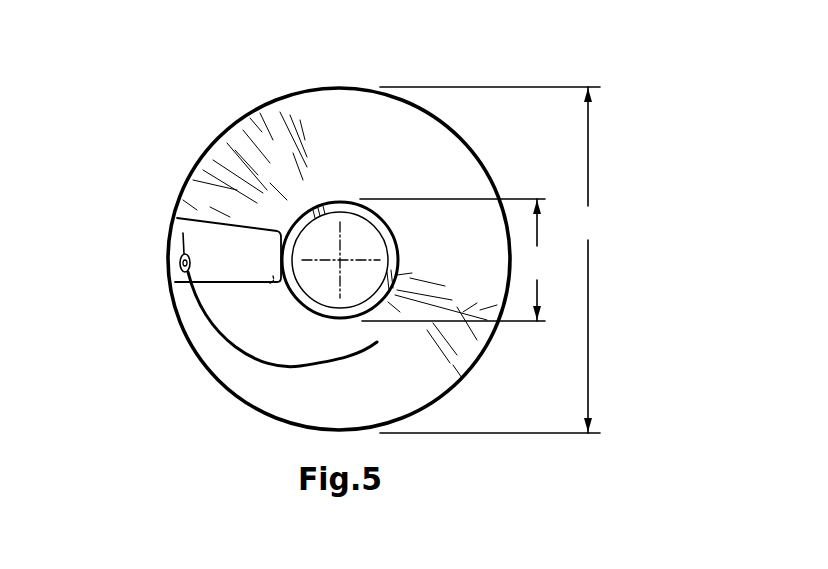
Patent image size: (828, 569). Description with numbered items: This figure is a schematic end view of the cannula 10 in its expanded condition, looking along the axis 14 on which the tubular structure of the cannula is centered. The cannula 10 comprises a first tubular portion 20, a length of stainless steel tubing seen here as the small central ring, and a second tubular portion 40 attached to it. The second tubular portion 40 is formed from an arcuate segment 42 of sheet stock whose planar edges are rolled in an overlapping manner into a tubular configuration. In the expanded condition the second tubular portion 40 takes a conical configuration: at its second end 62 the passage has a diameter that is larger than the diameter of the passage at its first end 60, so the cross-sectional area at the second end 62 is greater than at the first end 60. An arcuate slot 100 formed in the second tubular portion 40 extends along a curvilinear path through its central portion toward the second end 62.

The cannula 10 is at (163, 127).
The axis 14 is at (339, 260).
The first tubular portion 20 is at (348, 204).
The second tubular portion 40 is at (486, 152).
The arcuate segment 42 is at (418, 143).
The first end 60 is at (336, 202).
The second end 62 is at (363, 432).
The arcuate slot 100 is at (297, 366).